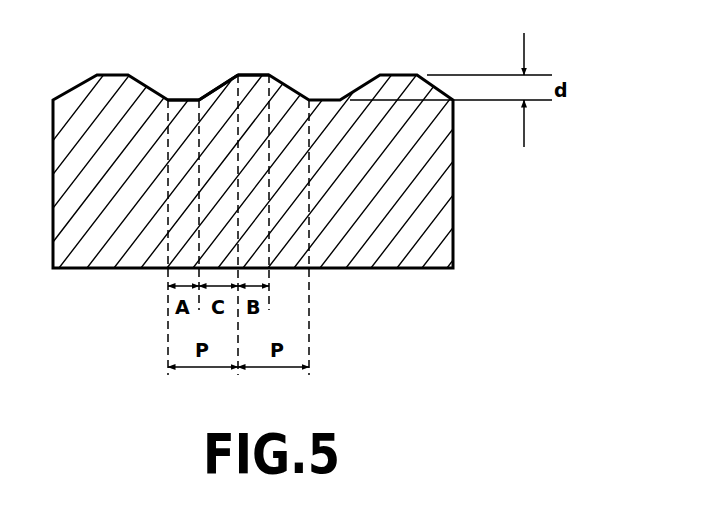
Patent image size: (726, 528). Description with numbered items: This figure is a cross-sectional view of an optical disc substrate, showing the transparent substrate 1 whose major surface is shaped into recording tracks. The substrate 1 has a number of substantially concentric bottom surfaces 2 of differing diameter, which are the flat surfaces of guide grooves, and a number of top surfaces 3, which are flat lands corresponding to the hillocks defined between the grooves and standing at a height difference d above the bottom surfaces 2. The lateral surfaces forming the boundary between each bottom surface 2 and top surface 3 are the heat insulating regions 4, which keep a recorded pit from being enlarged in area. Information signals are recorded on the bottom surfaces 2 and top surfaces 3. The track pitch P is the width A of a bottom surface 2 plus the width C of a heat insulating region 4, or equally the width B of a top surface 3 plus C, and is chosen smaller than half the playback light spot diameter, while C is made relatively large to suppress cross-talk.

The transparent substrate 1 is at (442, 223).
The bottom surfaces 2 is at (183, 100).
The top surfaces 3 is at (253, 72).
The heat insulating regions 4 is at (225, 82).